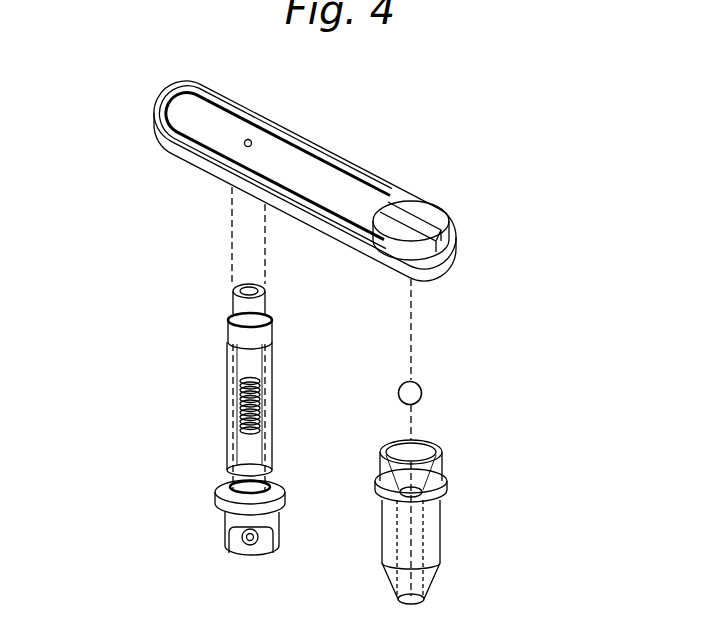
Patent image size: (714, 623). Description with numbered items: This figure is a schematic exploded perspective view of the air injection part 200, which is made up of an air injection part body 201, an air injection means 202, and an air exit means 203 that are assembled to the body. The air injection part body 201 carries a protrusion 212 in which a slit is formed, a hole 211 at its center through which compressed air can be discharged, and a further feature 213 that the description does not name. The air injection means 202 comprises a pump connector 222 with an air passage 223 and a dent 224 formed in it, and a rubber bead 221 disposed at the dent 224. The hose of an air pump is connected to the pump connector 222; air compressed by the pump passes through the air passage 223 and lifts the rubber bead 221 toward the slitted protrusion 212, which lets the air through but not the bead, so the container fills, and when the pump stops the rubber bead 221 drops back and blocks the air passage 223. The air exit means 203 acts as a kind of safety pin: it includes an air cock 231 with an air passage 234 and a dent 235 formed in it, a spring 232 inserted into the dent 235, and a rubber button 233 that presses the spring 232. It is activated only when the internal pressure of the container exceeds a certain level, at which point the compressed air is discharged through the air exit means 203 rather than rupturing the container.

The air injection part 200 is at (557, 193).
The air injection part body 201 is at (168, 92).
The air injection means 202 is at (542, 373).
The air exit means 203 is at (127, 310).
The hole 211 is at (252, 143).
The protrusion 212 is at (427, 201).
The channel 213 is at (234, 101).
The rubber bead 221 is at (422, 394).
The pump connector 222 is at (439, 528).
The air passage 223 is at (424, 560).
The dent 224 is at (447, 473).
The air cock 231 is at (217, 498).
The spring 232 is at (240, 396).
The rubber button 233 is at (236, 303).
The air passage 234 is at (242, 539).
The dent 235 is at (270, 512).